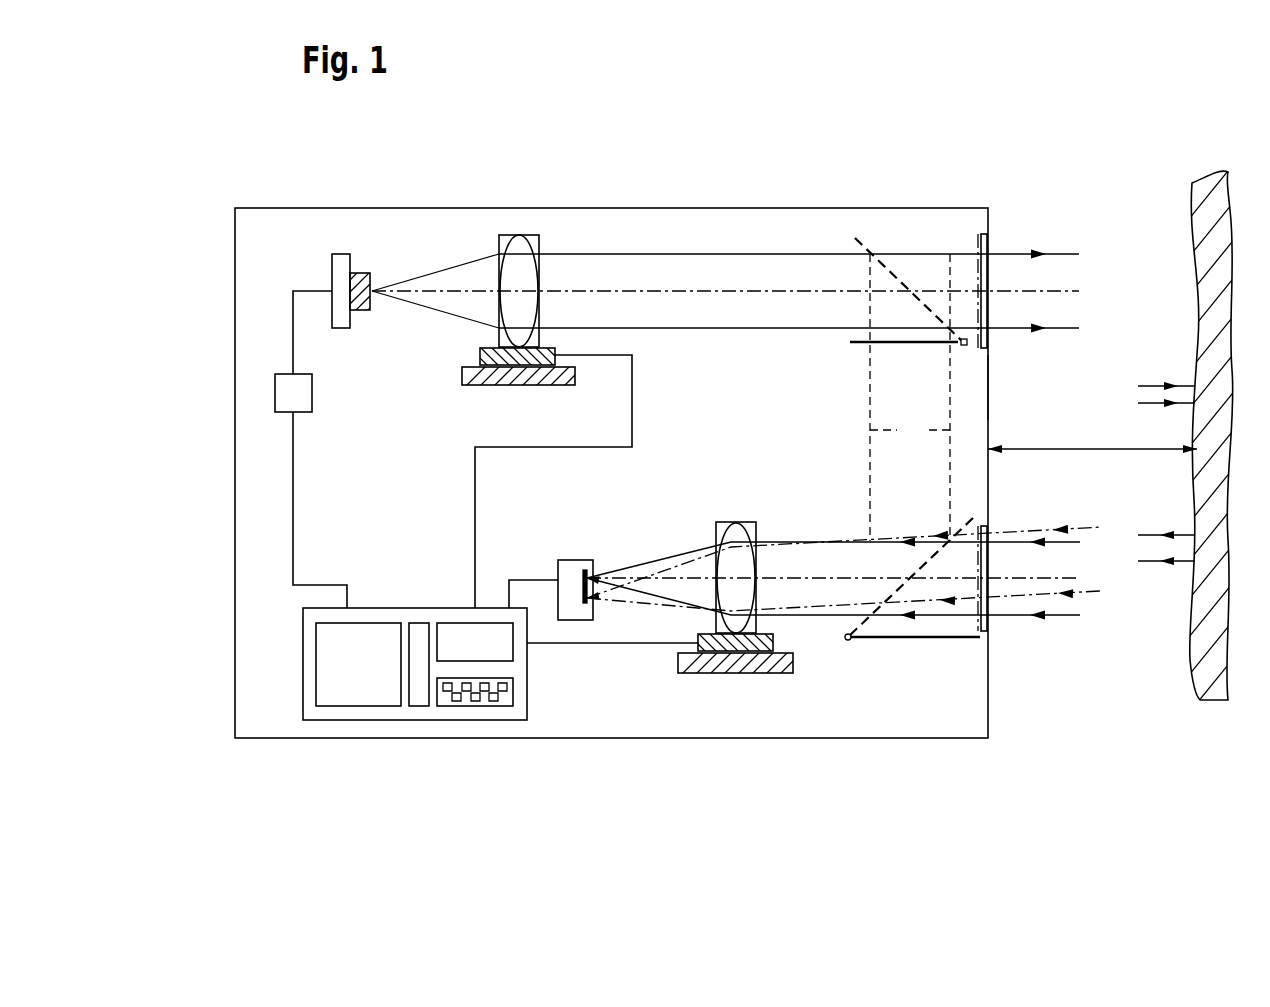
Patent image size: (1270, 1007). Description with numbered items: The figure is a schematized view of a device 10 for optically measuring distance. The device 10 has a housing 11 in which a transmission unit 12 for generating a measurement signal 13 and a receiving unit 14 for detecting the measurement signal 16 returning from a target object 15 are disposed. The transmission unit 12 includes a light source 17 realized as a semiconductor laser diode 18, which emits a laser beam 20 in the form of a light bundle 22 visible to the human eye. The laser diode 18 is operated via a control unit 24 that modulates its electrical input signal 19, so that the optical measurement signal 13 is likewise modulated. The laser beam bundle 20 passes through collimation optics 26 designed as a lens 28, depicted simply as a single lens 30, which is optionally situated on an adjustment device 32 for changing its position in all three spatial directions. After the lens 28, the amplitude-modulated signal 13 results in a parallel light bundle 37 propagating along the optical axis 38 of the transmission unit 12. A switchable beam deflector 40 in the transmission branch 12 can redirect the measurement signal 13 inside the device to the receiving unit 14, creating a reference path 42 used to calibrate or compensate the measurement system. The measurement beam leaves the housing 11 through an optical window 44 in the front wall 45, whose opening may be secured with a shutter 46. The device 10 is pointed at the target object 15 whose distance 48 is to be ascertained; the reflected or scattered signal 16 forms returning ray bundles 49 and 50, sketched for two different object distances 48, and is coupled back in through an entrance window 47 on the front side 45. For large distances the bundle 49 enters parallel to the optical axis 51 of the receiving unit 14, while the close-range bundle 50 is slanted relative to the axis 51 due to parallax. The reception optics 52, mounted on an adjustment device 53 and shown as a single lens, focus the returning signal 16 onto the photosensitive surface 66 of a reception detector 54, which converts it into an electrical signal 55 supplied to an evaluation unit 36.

The device for optically measuring distance 10 is at (607, 429).
The housing 11 is at (611, 437).
The transmission unit 12 is at (725, 379).
The measurement signal 13 is at (935, 268).
The receiving unit 14 is at (813, 577).
The target object 15 is at (1181, 456).
The returning measurement signal 16 is at (1162, 535).
The light source 17 is at (372, 288).
The semiconductor laser diode 18 is at (359, 325).
The electrical input signal 19 is at (267, 416).
The laser beam 20 is at (368, 328).
The light bundle 22 is at (467, 277).
The control unit 24 is at (282, 397).
The collimation optics 26 is at (532, 237).
The lens 28 is at (519, 291).
The single lens 30 is at (519, 291).
The adjustment device 32 is at (529, 478).
The evaluation unit 36 is at (417, 720).
The parallel light bundle 37 is at (735, 329).
The optical axis of the transmission unit 38 is at (767, 291).
The beam deflector 40 is at (897, 273).
The reference path 42 is at (910, 432).
The optical window 44 is at (985, 243).
The front wall 45 is at (990, 383).
The shutter 46 is at (975, 345).
The entrance window 47 is at (987, 638).
The distance 48 is at (1107, 449).
The returning ray bundle 49 is at (1055, 617).
The returning ray bundle 50 is at (1091, 598).
The optical axis of the receiving unit 51 is at (818, 577).
The reception optics 52 is at (750, 522).
The adjustment device 53 is at (769, 660).
The reception detector 54 is at (575, 561).
The electrical signal 55 is at (527, 580).
The photosensitive surface 66 is at (593, 606).